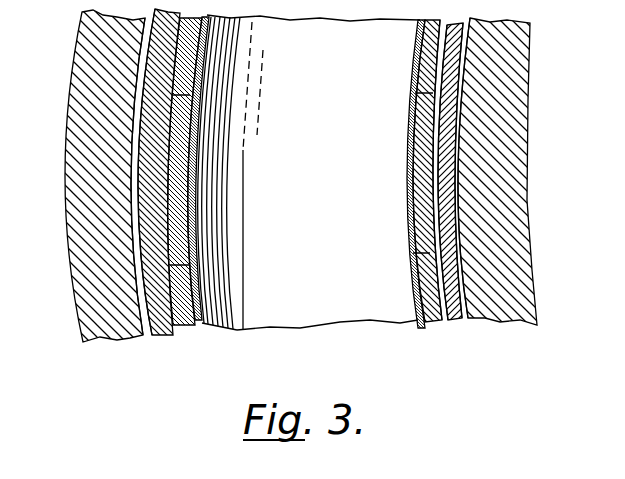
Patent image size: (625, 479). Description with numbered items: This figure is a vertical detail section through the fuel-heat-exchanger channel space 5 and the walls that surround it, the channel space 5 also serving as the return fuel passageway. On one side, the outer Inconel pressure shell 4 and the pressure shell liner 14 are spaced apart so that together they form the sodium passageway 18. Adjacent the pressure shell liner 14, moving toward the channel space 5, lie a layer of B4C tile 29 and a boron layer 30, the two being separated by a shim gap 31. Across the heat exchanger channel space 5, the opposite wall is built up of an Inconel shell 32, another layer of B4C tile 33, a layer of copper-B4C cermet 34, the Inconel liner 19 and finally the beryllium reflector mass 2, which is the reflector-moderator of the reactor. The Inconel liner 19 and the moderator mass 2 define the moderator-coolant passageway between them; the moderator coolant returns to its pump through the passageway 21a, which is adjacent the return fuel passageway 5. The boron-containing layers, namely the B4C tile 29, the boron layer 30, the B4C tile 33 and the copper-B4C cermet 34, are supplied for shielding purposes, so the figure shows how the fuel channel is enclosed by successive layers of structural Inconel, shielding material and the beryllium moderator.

The beryllium reflector mass 2 is at (512, 136).
The Inconel pressure shell 4 is at (80, 133).
The fuel-heat-exchanger channel space 5 is at (312, 201).
The pressure shell liner 14 is at (167, 336).
The sodium passageway 18 is at (148, 322).
The Inconel liner 19 is at (458, 318).
The moderator-coolant return passageway 21a is at (467, 310).
The layer of B4C tile 29 is at (190, 327).
The boron layer 30 is at (205, 330).
The shim gap 31 is at (200, 322).
The Inconel shell 32 is at (407, 130).
The layer of B4C tile 33 is at (438, 320).
The layer of copper-B4C cermet 34 is at (445, 317).